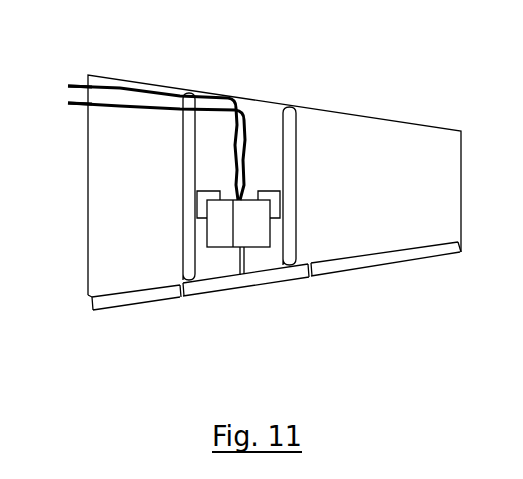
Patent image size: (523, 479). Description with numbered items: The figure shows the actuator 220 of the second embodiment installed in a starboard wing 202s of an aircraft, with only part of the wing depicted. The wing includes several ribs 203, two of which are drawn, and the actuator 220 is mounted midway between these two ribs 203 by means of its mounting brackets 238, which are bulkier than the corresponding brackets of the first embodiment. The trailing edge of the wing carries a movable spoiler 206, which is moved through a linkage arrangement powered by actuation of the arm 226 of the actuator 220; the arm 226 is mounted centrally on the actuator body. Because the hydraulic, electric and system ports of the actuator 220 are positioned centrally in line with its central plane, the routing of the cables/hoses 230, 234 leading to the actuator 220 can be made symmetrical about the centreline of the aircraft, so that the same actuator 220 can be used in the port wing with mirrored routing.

The starboard wing 202s is at (394, 138).
The ribs 203 is at (185, 225).
The spoiler 206 is at (257, 273).
The actuator 220 is at (270, 242).
The arm 226 is at (242, 262).
The cables/hoses 230 is at (77, 103).
The cables/hoses 234 is at (217, 97).
The mounting brackets 238 is at (268, 191).